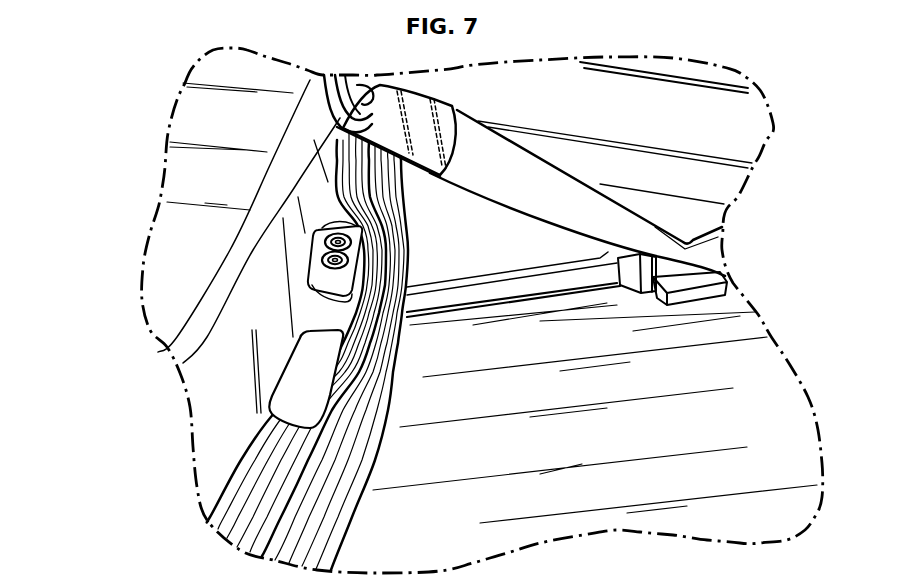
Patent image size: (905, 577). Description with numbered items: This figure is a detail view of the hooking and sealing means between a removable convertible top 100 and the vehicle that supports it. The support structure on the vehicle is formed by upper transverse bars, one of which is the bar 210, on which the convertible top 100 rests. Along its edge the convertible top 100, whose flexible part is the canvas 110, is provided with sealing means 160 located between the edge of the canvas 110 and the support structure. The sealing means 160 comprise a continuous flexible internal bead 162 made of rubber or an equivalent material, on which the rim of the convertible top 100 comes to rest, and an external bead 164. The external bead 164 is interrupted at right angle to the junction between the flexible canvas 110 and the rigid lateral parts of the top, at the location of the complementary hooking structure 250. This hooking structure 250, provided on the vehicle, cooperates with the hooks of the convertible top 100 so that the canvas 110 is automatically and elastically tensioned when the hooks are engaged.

The convertible top 100 is at (716, 134).
The canvas 110 is at (637, 105).
The sealing means 160 is at (308, 373).
The flexible internal bead 162 is at (360, 230).
The external bead 164 is at (333, 140).
The bar 210 is at (201, 253).
The complementary hooking structure 250 is at (320, 242).